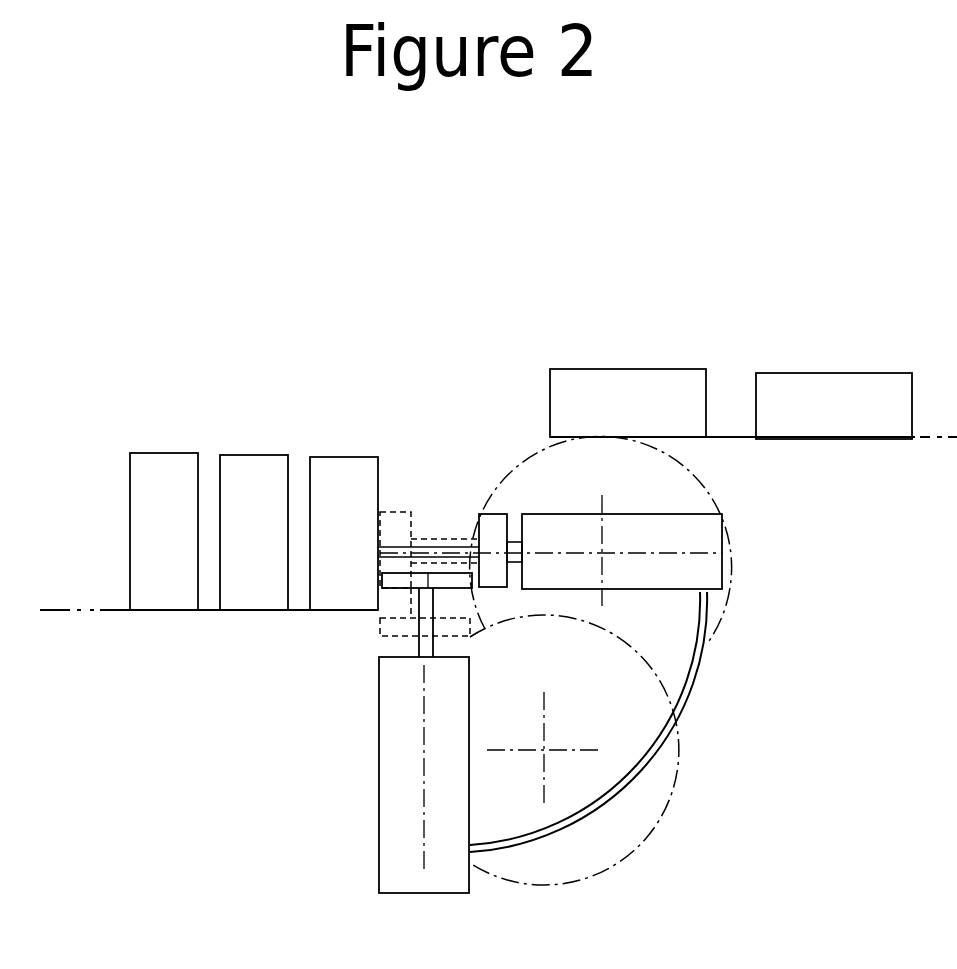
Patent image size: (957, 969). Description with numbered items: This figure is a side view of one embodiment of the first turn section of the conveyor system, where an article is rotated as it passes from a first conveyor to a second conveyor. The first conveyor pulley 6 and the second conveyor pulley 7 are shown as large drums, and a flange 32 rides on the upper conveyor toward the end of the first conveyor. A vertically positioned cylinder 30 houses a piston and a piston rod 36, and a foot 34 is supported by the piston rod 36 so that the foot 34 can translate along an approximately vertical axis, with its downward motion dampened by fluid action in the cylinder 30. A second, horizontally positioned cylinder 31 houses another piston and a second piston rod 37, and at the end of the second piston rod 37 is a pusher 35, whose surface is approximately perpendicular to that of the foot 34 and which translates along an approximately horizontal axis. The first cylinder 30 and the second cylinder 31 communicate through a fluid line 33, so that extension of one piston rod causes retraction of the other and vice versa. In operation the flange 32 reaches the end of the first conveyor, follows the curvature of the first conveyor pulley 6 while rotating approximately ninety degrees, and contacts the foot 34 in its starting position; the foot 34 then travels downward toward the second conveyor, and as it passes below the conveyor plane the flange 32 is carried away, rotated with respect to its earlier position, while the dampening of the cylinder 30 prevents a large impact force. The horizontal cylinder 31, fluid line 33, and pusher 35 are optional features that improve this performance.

The first conveyor pulley 6 is at (733, 578).
The second conveyor pulley 7 is at (640, 847).
The vertically positioned cylinder 30 is at (380, 798).
The horizontally positioned cylinder 31 is at (687, 515).
The flange 32 is at (641, 367).
The fluid line 33 is at (688, 697).
The foot 34 is at (420, 582).
The pusher 35 is at (483, 523).
The piston rod 36 is at (417, 643).
The second piston rod 37 is at (513, 542).